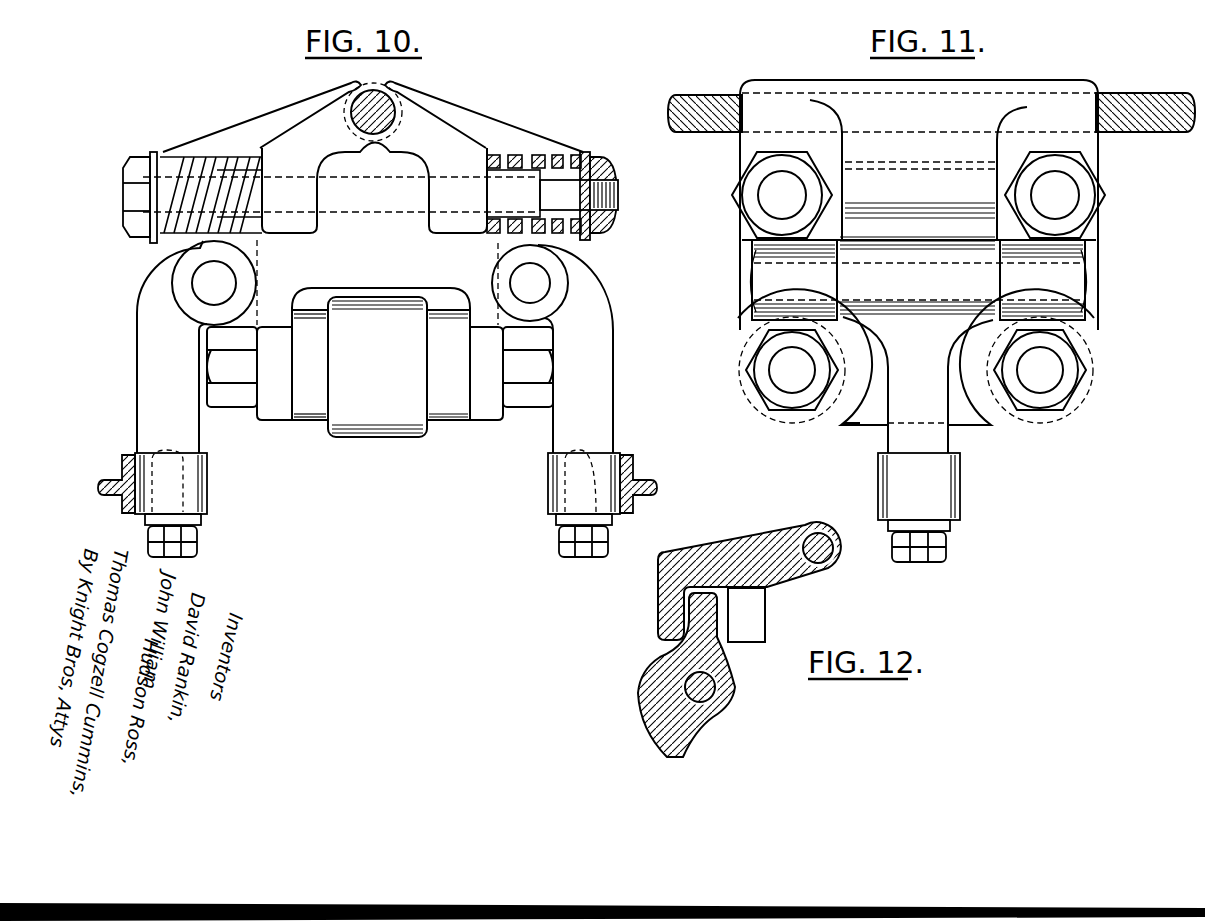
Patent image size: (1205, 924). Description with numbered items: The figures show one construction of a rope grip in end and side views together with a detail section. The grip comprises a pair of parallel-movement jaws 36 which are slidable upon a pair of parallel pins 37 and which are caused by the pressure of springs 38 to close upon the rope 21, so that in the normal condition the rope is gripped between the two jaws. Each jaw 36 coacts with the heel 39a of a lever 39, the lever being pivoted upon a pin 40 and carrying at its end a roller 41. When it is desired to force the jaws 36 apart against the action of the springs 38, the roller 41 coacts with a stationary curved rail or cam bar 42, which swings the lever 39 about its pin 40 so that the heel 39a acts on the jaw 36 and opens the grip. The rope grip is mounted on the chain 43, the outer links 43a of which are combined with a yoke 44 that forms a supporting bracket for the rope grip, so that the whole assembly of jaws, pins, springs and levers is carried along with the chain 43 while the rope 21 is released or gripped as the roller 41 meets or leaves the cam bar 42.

In FIG. 10, the rope 21 is at (372, 102).
In FIG. 11, the rope 21 is at (692, 108).
In FIG. 10, the parallel-movement jaw 36 is at (300, 133).
In FIG. 11, the parallel-movement jaw 36 is at (922, 106).
In FIG. 10, the parallel pin 37 is at (620, 194).
In FIG. 11, the parallel pin 37 is at (918, 195).
In FIG. 10, the spring 38 is at (192, 167).
In FIG. 10, the lever 39 is at (150, 370).
In FIG. 11, the lever 39 is at (916, 371).
In FIG. 12, the lever 39 is at (680, 732).
In FIG. 12, the heel 39a is at (700, 612).
In FIG. 10, the pin 40 is at (610, 266).
In FIG. 11, the pin 40 is at (1088, 283).
In FIG. 12, the pin 40 is at (702, 688).
In FIG. 10, the roller 41 is at (208, 487).
In FIG. 11, the roller 41 is at (919, 507).
In FIG. 10, the stationary curved rail or cam bar 42 is at (120, 477).
In FIG. 10, the chain 43 is at (313, 421).
In FIG. 10, the outer link 43a is at (278, 421).
In FIG. 11, the outer link 43a is at (867, 420).
In FIG. 10, the yoke 44 is at (381, 343).